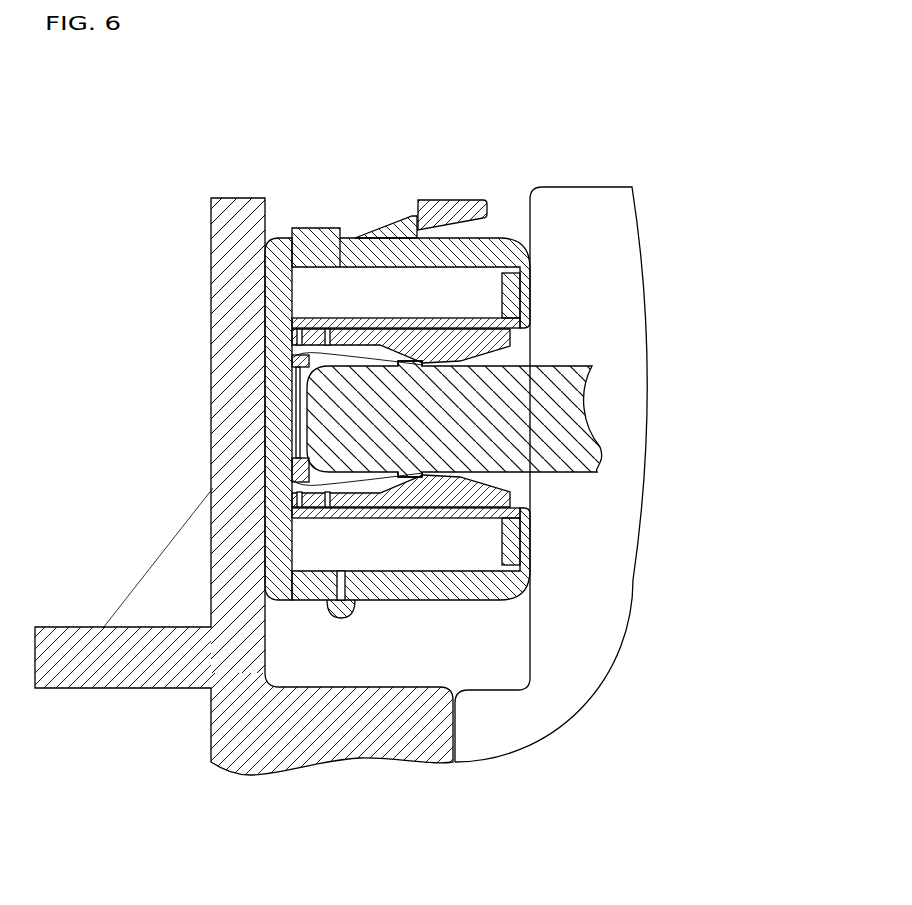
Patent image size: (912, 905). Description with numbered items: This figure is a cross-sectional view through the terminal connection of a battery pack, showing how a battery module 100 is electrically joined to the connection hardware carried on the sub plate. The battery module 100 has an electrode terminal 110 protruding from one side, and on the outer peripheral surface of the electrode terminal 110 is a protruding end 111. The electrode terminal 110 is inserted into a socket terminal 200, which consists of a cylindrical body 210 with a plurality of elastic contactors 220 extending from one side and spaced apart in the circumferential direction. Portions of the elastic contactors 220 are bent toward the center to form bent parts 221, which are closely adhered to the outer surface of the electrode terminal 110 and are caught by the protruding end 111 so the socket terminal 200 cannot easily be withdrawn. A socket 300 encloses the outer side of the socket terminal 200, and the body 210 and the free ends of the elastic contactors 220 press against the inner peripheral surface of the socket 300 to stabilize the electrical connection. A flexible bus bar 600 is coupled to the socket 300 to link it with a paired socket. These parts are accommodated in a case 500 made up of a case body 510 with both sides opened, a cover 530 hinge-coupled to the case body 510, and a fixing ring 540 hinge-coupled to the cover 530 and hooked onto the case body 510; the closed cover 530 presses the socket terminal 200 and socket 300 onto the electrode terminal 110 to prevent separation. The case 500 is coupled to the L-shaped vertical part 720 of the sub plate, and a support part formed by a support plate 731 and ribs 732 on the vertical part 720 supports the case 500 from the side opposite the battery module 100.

The battery module 100 is at (597, 166).
The electrode terminal 110 is at (570, 440).
The protruding end 111 is at (300, 475).
The socket terminal 200 is at (359, 307).
The body 210 is at (292, 358).
The elastic contactor 220 is at (589, 419).
The bent part 221 is at (425, 362).
The socket 300 is at (402, 297).
The case 500 is at (450, 177).
The case body 510 is at (500, 237).
The cover 530 is at (270, 323).
The fixing ring 540 is at (433, 200).
The flexible bus bar 600 is at (517, 287).
The vertical part 720 is at (227, 742).
The support plate 731 is at (220, 443).
The rib 732 is at (147, 597).